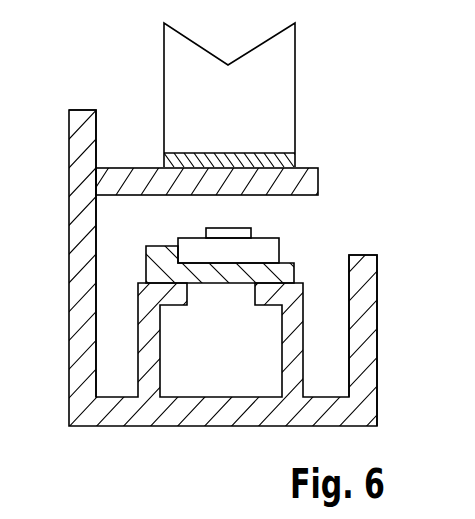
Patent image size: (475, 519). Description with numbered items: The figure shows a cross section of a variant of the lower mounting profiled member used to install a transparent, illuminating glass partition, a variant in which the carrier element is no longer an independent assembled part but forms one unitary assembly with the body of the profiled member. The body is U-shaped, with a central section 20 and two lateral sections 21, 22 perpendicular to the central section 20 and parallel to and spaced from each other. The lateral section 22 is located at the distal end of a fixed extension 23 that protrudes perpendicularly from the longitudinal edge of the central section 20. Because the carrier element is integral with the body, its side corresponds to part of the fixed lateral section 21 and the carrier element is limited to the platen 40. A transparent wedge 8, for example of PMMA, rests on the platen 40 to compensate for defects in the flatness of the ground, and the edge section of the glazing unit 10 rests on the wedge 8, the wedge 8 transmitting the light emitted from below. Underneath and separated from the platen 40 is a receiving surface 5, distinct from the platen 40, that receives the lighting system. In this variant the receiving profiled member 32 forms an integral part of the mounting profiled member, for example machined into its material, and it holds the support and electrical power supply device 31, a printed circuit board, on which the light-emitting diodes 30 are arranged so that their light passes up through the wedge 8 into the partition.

The receiving surface 5 is at (307, 273).
The wedge 8 is at (292, 160).
The component 10 is at (280, 108).
The central section 20 is at (197, 412).
The lateral section 21 is at (78, 196).
The lateral section 22 is at (2, 139).
The fixed extension 23 is at (372, 329).
The light-emitting diode 30 is at (247, 234).
The support and electrical power supply device 31 is at (268, 253).
The receiving profiled member 32 is at (153, 272).
The platen 40 is at (313, 182).